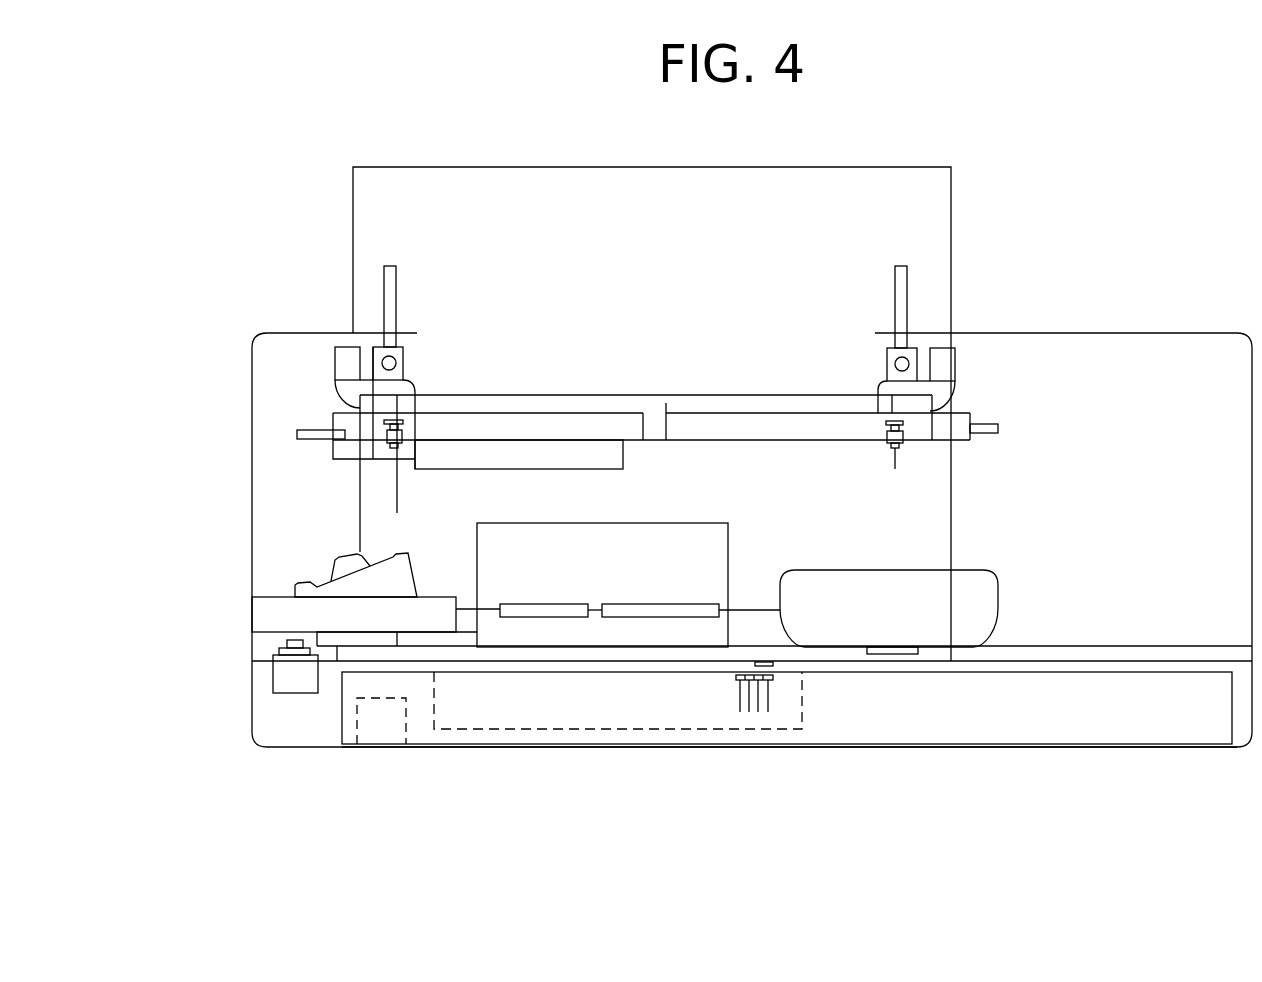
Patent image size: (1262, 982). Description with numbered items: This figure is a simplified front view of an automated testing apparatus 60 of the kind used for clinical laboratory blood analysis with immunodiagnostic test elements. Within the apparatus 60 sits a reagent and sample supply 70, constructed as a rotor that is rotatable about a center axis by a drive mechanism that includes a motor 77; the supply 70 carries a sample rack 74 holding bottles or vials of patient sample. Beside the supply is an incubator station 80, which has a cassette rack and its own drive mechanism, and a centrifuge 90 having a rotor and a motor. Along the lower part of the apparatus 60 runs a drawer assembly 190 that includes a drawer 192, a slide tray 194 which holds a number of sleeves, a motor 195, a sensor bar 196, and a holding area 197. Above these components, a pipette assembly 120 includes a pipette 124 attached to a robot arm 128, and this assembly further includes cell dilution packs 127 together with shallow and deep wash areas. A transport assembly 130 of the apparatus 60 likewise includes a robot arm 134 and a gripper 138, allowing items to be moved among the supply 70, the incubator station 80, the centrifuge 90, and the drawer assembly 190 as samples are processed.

The testing apparatus 60 is at (1044, 281).
The reagent and sample supply 70 is at (319, 580).
The sample rack 74 is at (440, 597).
The motor 77 is at (265, 643).
The incubator station 80 is at (658, 516).
The centrifuge 90 is at (985, 555).
The pipette assembly 120 is at (412, 303).
The pipette 124 is at (397, 492).
The cell dilution packs 127 is at (513, 604).
The robot arm 128 is at (426, 362).
The transport assembly 130 is at (880, 298).
The robot arm 134 is at (870, 358).
The gripper 138 is at (893, 460).
The drawer assembly 190 is at (1082, 748).
The drawer 192 is at (982, 745).
The slide tray 194 is at (568, 722).
The motor 195 is at (375, 727).
The sensor bar 196 is at (773, 663).
The holding area 197 is at (632, 604).